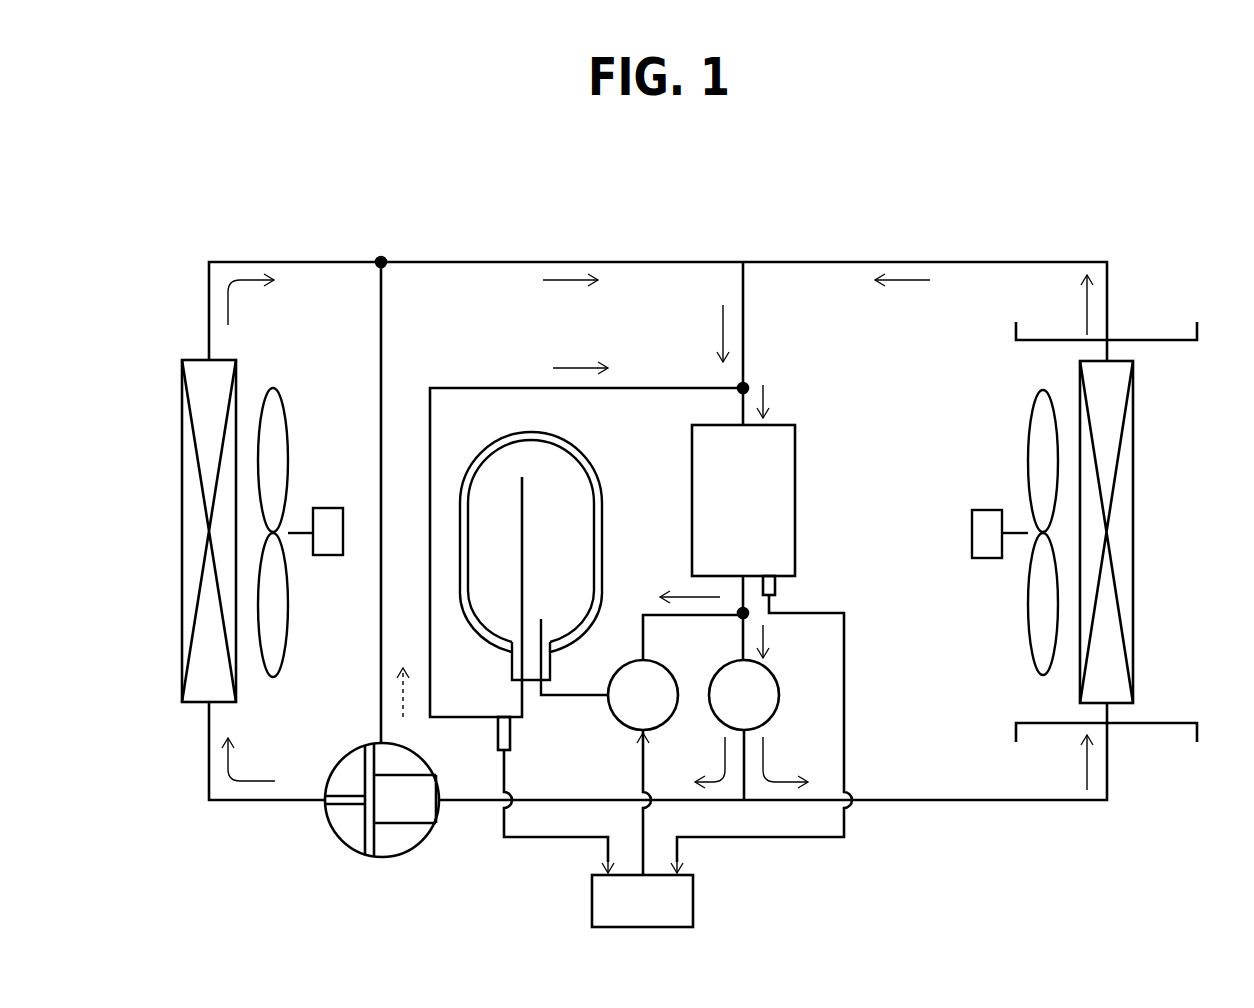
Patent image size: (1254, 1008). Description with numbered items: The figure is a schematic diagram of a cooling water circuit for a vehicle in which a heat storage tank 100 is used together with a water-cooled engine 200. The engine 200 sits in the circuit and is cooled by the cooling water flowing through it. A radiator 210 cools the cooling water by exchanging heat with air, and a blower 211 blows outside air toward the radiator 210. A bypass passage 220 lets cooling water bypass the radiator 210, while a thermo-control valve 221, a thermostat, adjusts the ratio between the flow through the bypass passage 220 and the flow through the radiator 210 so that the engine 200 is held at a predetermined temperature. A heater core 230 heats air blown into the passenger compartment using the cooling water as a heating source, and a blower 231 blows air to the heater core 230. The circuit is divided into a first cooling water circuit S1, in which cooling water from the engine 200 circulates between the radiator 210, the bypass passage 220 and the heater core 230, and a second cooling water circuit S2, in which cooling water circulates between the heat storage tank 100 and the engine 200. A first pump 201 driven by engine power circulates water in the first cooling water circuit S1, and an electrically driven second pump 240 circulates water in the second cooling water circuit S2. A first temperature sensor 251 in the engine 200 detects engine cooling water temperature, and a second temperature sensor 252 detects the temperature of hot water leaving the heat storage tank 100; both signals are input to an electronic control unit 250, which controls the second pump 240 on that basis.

The heat storage tank 100 is at (588, 460).
The water-cooled engine 200 is at (796, 490).
The first pump 201 is at (779, 682).
The radiator 210 is at (188, 358).
The blower 211 is at (327, 507).
The bypass passage 220 is at (383, 330).
The thermo-control valve 221 is at (422, 843).
The heater core 230 is at (1135, 562).
The blower 231 is at (985, 509).
The second pump 240 is at (667, 672).
The electronic control unit 250 is at (694, 900).
The first temperature sensor 251 is at (782, 590).
The second temperature sensor 252 is at (512, 735).
The first cooling water circuit S1 is at (640, 260).
The second cooling water circuit S2 is at (635, 386).